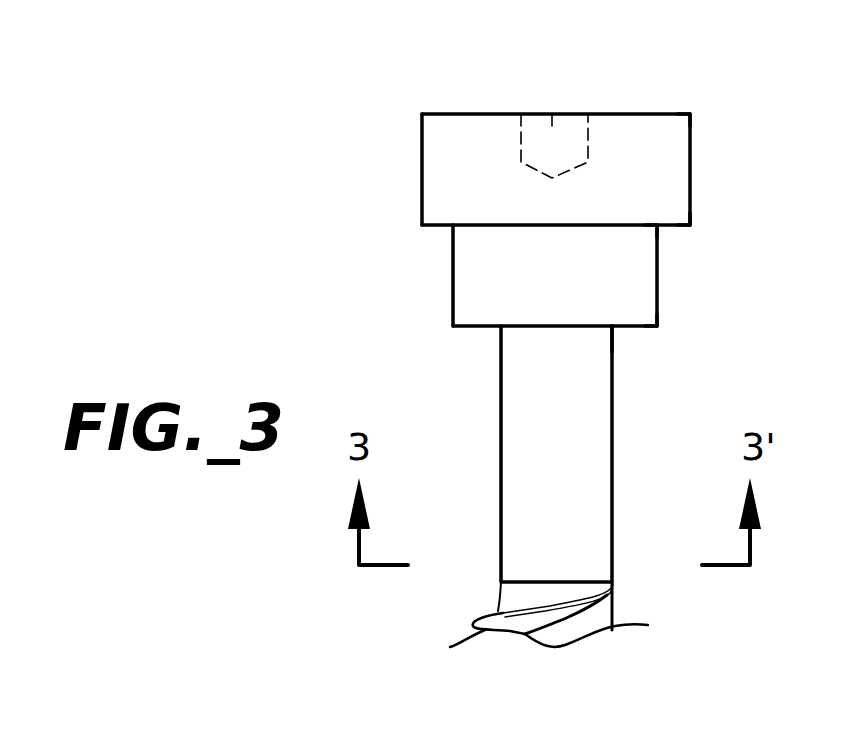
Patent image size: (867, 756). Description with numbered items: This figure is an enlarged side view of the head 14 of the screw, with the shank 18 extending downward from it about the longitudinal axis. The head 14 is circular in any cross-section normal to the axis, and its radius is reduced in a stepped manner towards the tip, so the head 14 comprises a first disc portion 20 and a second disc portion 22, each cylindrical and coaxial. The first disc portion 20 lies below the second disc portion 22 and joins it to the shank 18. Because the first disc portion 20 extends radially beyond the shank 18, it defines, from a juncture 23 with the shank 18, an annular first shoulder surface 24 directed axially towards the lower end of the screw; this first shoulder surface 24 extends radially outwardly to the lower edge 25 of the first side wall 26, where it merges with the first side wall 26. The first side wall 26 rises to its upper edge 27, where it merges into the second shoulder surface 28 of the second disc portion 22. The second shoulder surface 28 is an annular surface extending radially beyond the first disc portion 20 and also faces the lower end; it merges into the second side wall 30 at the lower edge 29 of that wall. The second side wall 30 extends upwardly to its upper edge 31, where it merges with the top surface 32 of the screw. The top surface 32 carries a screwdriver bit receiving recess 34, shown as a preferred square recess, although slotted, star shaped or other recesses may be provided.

The head 14 is at (364, 78).
The shank 18 is at (612, 492).
The first disc portion 20 is at (430, 279).
The second disc portion 22 is at (398, 179).
The juncture with the shank 23 is at (612, 337).
The first shoulder surface 24 is at (625, 328).
The lower edge of the first side wall 25 is at (656, 322).
The first side wall 26 is at (656, 275).
The upper edge of the first side wall 27 is at (657, 232).
The second shoulder surface 28 is at (660, 228).
The lower edge of the second side wall 29 is at (691, 222).
The second side wall 30 is at (690, 170).
The upper edge of the second side wall 31 is at (690, 114).
The top surface 32 is at (618, 114).
The screwdriver bit receiving recess 34 is at (552, 114).